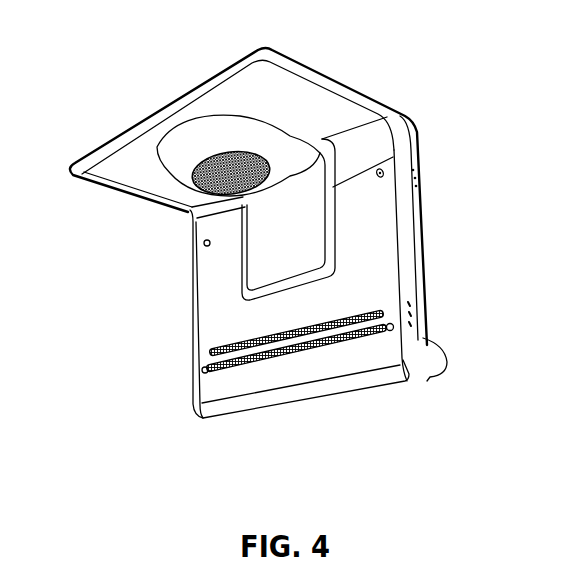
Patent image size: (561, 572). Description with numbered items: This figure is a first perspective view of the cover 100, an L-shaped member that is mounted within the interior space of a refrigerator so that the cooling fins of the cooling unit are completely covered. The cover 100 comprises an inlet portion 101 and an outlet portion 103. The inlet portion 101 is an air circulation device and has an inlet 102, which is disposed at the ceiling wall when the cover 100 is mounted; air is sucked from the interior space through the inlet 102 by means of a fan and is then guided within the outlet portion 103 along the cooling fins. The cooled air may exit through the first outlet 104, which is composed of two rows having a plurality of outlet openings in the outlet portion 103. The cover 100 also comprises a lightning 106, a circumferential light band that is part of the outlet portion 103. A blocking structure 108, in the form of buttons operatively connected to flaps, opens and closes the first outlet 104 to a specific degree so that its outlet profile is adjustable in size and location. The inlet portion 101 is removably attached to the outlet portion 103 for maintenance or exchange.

The cover 100 is at (168, 305).
The inlet portion 101 is at (385, 157).
The inlet 102 is at (218, 170).
The outlet portion 103 is at (279, 104).
The first outlet 104 is at (295, 353).
The lightning 106 is at (212, 128).
The blocking structure 108 is at (397, 327).